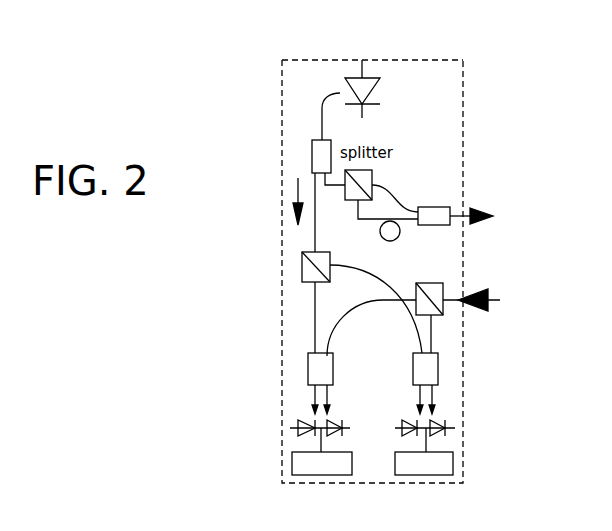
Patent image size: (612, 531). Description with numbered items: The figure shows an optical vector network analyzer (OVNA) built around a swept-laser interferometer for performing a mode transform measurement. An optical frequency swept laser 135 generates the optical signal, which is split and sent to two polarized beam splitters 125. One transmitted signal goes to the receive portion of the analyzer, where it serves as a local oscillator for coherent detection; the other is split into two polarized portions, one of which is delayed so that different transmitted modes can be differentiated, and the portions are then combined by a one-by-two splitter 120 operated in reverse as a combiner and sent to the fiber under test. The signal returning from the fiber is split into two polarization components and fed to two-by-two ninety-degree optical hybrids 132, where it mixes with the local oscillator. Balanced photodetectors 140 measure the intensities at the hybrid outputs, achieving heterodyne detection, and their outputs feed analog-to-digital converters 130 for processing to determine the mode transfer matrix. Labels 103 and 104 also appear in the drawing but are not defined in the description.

The optical vector network analyzer 103 is at (282, 92).
The swept laser 135 is at (318, 58).
The polarization controller 120 is at (312, 148).
The polarizing beam splitter 125 is at (302, 265).
The optical coupler 132 is at (308, 368).
The balanced photodetector 140 is at (298, 426).
The avalanche photodiode 130 is at (292, 462).
The device under test 104 is at (563, 528).